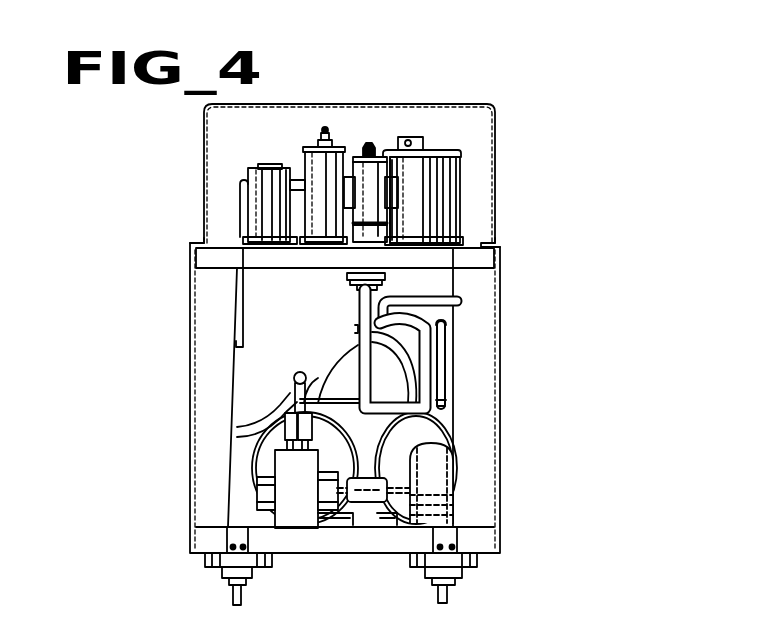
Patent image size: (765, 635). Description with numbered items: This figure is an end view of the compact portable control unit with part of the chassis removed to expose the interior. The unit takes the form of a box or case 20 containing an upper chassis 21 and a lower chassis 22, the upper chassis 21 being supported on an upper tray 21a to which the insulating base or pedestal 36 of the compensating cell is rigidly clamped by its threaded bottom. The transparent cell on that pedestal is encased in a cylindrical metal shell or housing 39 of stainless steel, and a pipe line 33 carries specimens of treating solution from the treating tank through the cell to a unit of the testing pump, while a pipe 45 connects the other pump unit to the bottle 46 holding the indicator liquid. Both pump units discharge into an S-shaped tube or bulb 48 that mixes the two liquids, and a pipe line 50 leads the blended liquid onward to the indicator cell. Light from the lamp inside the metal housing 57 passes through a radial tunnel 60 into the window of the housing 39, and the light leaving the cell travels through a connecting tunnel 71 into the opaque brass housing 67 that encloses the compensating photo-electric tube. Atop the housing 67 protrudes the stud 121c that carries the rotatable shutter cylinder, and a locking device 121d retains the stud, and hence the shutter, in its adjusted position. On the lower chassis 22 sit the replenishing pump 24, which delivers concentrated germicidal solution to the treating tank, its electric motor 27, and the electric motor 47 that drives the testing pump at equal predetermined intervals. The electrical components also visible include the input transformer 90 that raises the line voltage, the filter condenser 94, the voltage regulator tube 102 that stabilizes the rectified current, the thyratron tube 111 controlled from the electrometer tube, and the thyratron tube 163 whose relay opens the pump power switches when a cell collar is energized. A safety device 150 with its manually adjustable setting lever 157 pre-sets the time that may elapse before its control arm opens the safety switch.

The box or case 20 is at (186, 280).
The upper chassis 21 is at (462, 247).
The upper tray 21a is at (362, 269).
The lower chassis 22 is at (207, 538).
The pump 24 is at (297, 518).
The electric motor 27 is at (444, 436).
The pipe line 33 is at (364, 476).
The base or pedestal 36 is at (348, 286).
The cylindrical metal shell or housing 39 is at (368, 182).
The pipe 45 is at (424, 298).
The bottle 46 is at (343, 390).
The electric motor 47 is at (260, 453).
The tube or bulb 48 is at (438, 355).
The pipe line 50 is at (400, 318).
The housing 57 is at (423, 152).
The tunnel 60 is at (392, 199).
The housing 67 is at (330, 165).
The connecting tunnel 71 is at (348, 197).
The input transformer 90 is at (270, 150).
The condenser 94 is at (458, 190).
The voltage regulator tube 102 is at (348, 165).
The thyratron tube 111 is at (254, 197).
The stud 121c is at (323, 127).
The locking device 121d is at (316, 142).
The safety device 150 is at (460, 165).
The setting lever 157 is at (411, 139).
The thyratron tube 163 is at (270, 215).